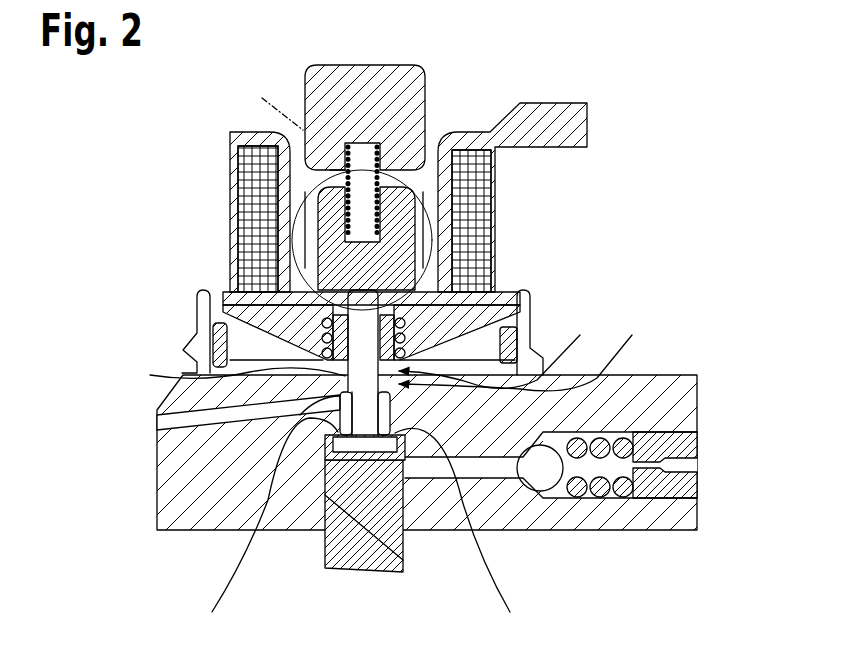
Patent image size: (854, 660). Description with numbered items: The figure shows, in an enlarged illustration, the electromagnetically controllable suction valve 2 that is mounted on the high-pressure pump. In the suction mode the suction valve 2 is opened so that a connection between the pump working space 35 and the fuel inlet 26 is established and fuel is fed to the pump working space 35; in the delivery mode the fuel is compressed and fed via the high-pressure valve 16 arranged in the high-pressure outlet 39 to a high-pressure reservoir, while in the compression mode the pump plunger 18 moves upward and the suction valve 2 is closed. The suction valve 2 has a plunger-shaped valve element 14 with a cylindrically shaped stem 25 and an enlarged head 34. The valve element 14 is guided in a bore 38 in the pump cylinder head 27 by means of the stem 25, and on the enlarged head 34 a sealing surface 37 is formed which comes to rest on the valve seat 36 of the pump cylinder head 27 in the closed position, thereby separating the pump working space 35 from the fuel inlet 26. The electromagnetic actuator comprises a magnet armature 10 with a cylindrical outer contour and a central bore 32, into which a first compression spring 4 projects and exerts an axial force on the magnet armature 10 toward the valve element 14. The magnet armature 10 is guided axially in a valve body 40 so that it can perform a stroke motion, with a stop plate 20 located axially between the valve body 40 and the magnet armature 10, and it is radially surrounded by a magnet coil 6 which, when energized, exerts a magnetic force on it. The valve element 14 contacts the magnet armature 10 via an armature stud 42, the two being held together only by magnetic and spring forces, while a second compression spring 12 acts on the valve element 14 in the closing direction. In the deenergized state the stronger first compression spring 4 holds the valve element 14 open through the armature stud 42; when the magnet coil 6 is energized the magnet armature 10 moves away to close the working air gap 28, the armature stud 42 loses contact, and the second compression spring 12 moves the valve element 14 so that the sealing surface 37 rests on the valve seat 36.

The suction valve 2 is at (692, 108).
The first compression spring 4 is at (382, 145).
The magnet coil 6 is at (252, 200).
The magnet armature 10 is at (322, 240).
The second compression spring 12 is at (500, 284).
The valve element 14 is at (150, 375).
The high-pressure valve 16 is at (600, 470).
The pump plunger 18 is at (363, 548).
The stop plate 20 is at (425, 258).
The stem 25 is at (498, 343).
The fuel inlet 26 is at (176, 438).
The pump cylinder head 27 is at (176, 483).
The working air gap 28 is at (342, 174).
The central bore 32 is at (363, 150).
The head 34 is at (347, 518).
The pump working space 35 is at (381, 456).
The valve seat 36 is at (341, 402).
The sealing surface 37 is at (361, 532).
The bore 38 is at (523, 344).
The high-pressure outlet 39 is at (676, 468).
The valve body 40 is at (200, 323).
The armature stud 42 is at (290, 298).